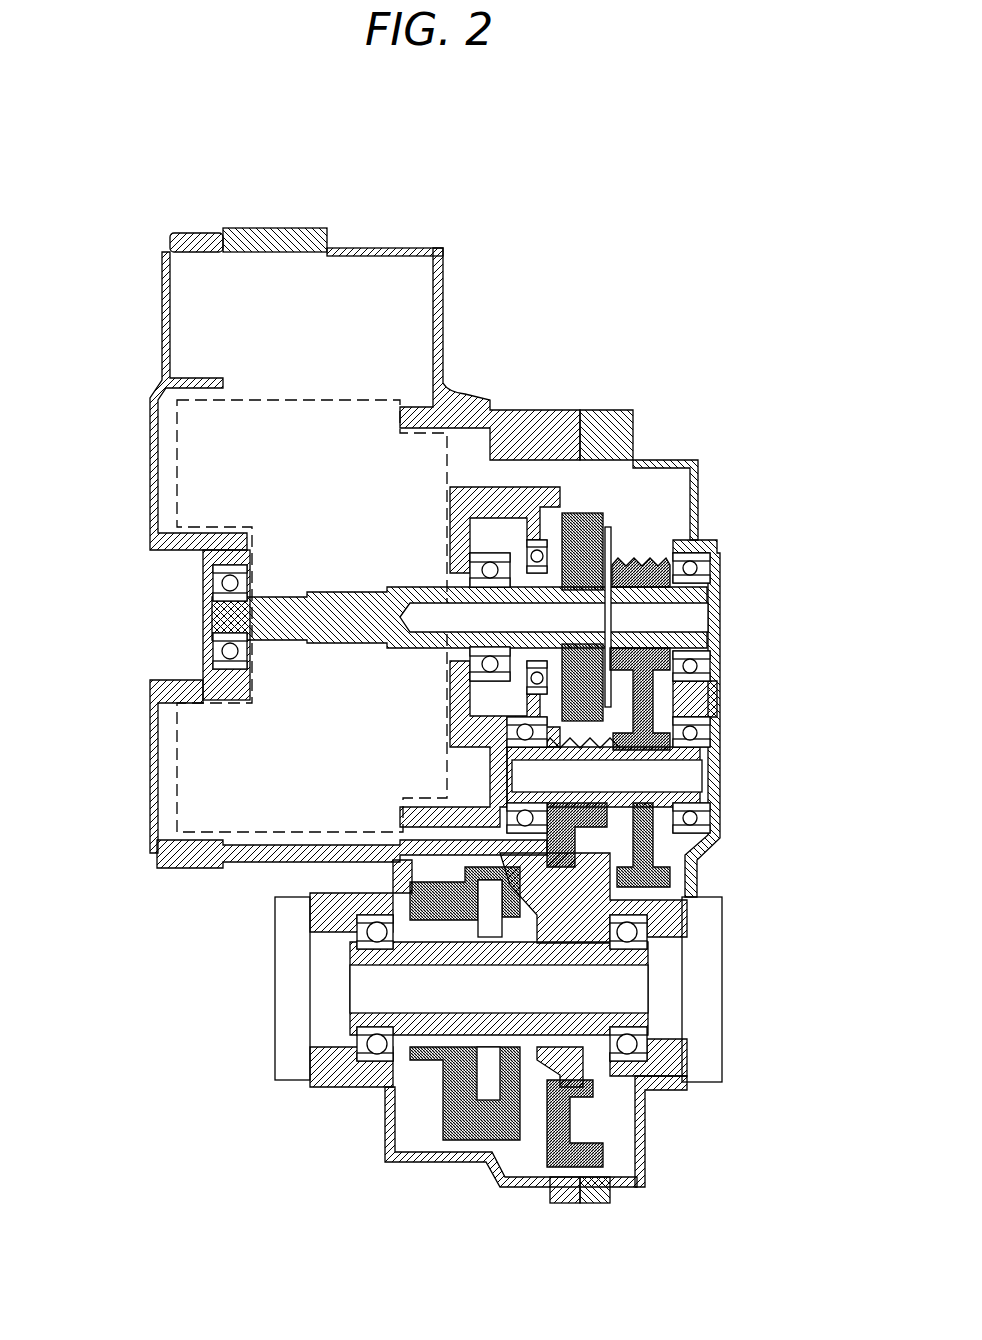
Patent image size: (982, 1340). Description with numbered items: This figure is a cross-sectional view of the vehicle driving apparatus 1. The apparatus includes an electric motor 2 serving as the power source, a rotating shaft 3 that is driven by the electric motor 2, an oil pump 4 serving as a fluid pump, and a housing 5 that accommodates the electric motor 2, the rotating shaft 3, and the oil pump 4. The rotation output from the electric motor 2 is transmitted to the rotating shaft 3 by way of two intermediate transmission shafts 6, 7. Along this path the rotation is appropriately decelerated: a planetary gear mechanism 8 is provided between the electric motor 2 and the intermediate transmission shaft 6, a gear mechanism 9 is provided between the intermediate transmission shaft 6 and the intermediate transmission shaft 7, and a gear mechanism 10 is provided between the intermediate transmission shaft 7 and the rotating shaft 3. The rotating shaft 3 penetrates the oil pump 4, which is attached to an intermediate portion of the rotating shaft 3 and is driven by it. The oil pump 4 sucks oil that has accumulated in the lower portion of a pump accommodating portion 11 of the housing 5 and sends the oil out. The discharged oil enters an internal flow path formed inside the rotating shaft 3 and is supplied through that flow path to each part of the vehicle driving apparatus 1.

The vehicle driving apparatus 1 is at (461, 705).
The electric motor 2 is at (180, 420).
The rotating shaft 3 is at (344, 1002).
The oil pump 4 is at (442, 1122).
The housing 5 is at (430, 248).
The intermediate transmission shaft 6 is at (698, 614).
The intermediate transmission shaft 7 is at (698, 775).
The planetary gear mechanism 8 is at (607, 513).
The gear mechanism 9 is at (702, 698).
The gear mechanism 10 is at (580, 830).
The pump accommodating portion 11 is at (520, 1152).